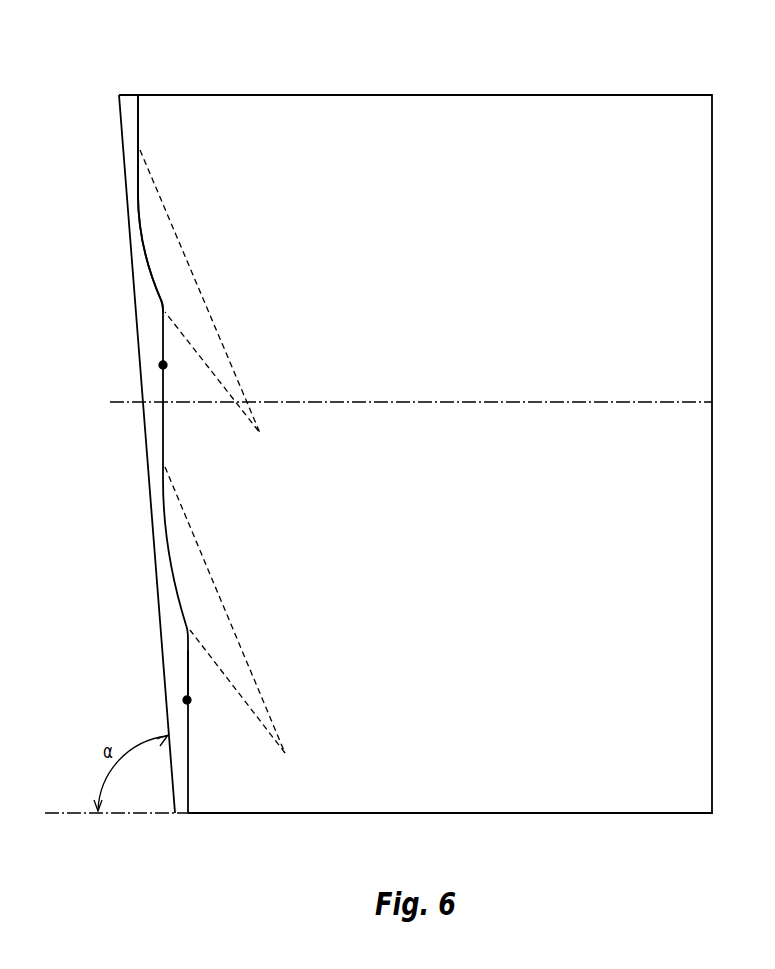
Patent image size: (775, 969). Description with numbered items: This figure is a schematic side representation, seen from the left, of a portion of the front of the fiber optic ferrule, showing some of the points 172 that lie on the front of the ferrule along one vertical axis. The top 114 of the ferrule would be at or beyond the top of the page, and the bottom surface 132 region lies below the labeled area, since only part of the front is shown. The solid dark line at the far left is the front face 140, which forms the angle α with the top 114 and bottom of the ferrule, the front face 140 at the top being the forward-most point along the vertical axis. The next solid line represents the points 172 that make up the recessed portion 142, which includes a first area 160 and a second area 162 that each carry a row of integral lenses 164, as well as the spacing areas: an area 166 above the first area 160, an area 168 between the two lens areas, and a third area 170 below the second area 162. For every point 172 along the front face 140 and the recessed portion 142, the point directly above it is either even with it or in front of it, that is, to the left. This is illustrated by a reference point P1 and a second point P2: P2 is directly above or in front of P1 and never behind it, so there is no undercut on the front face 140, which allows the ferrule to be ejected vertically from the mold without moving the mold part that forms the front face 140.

The top 114 is at (411, 95).
The bottom surface 132 is at (498, 95).
The front face 140 is at (122, 124).
The recessed portion 142 is at (127, 104).
The first area 160 is at (155, 282).
The second area 162 is at (170, 568).
The integral lenses 164 is at (145, 240).
The area above the first area 166 is at (138, 124).
The area between the two areas 168 is at (165, 438).
The third area 170 is at (188, 788).
The points 172 is at (186, 665).
The point P1 is at (187, 700).
The point P2 is at (163, 365).